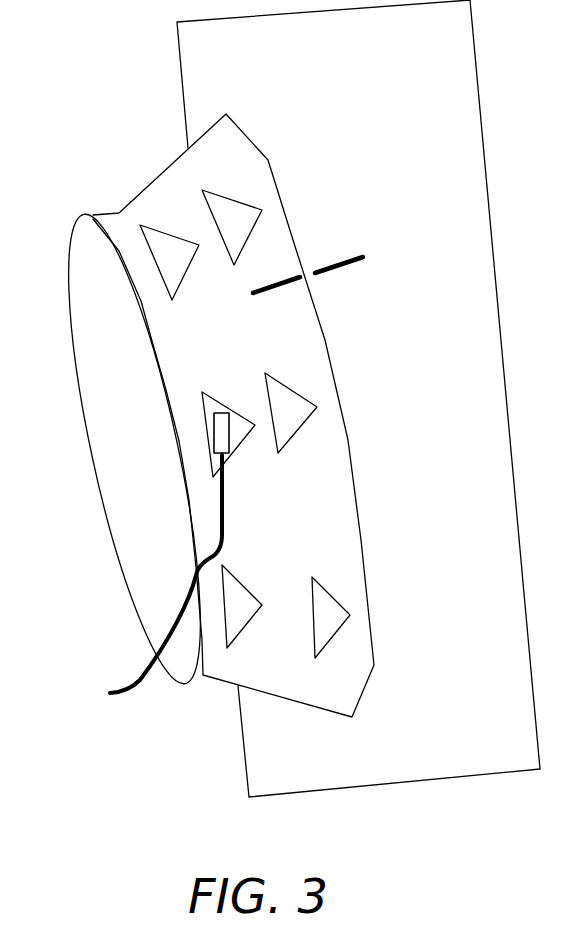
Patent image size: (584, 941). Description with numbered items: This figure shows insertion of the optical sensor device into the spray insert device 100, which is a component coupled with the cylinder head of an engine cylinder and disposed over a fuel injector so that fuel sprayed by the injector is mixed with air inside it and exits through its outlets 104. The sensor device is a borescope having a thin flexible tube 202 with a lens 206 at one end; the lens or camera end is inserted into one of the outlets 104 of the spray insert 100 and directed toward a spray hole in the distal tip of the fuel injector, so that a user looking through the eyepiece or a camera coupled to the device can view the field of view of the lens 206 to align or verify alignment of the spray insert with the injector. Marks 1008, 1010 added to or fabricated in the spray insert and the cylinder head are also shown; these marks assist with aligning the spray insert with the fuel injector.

The spray insert device 100 is at (80, 340).
The outlets 104 is at (217, 400).
The flexible tube 202 is at (145, 673).
The lens 206 is at (229, 437).
The mark 1008 is at (267, 295).
The mark 1010 is at (330, 273).